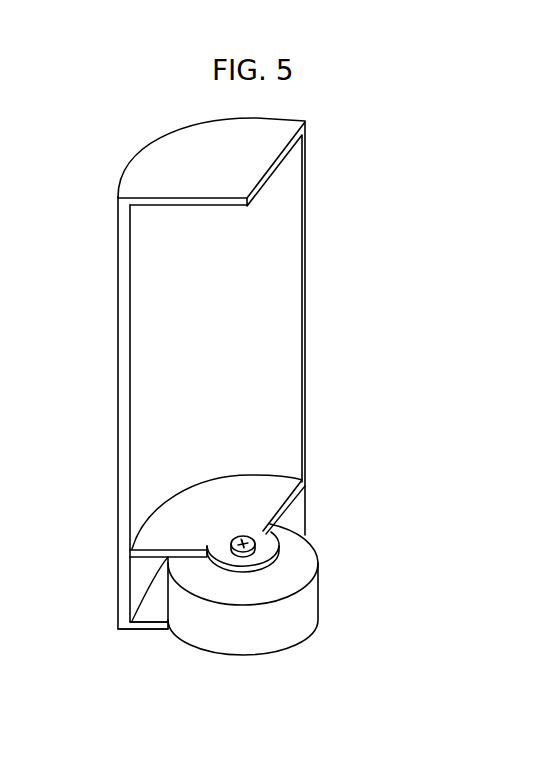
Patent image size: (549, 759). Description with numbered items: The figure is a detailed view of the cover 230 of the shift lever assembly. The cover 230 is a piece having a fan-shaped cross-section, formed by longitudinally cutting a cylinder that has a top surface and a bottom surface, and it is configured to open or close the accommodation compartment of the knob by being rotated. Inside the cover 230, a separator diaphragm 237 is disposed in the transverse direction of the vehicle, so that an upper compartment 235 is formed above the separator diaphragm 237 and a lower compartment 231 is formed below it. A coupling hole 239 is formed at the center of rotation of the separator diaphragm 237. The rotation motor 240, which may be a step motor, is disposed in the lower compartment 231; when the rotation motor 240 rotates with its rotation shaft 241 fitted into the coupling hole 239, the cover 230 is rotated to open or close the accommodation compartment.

The cover 230 is at (345, 265).
The lower compartment 231 is at (151, 607).
The upper compartment 235 is at (248, 370).
The separator diaphragm 237 is at (253, 503).
The coupling hole 239 is at (263, 528).
The rotation motor 240 is at (302, 610).
The rotation shaft 241 is at (243, 548).